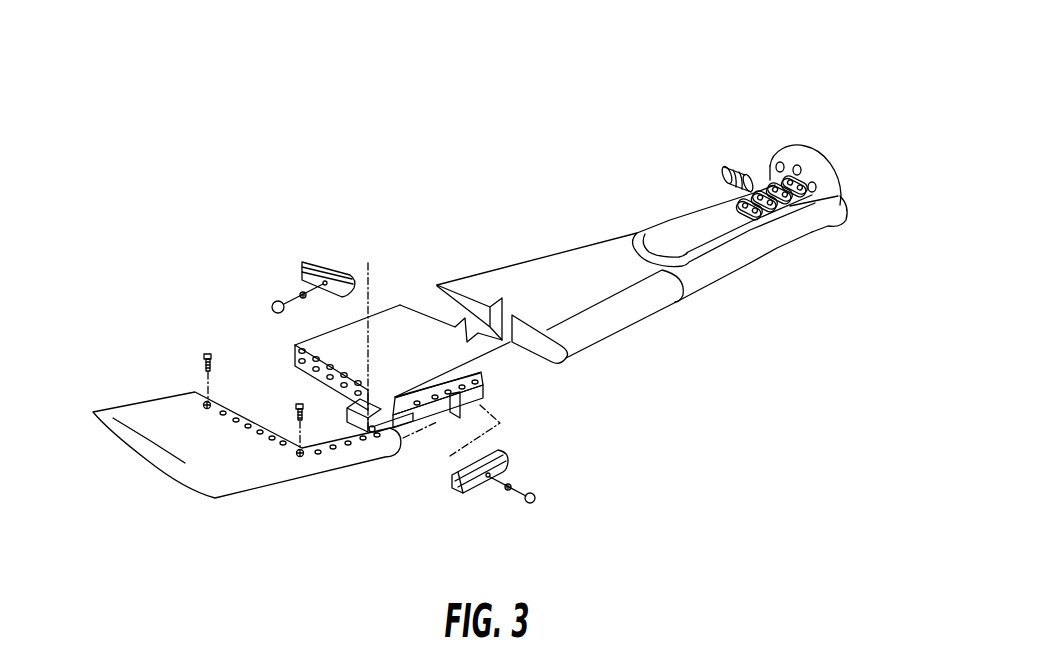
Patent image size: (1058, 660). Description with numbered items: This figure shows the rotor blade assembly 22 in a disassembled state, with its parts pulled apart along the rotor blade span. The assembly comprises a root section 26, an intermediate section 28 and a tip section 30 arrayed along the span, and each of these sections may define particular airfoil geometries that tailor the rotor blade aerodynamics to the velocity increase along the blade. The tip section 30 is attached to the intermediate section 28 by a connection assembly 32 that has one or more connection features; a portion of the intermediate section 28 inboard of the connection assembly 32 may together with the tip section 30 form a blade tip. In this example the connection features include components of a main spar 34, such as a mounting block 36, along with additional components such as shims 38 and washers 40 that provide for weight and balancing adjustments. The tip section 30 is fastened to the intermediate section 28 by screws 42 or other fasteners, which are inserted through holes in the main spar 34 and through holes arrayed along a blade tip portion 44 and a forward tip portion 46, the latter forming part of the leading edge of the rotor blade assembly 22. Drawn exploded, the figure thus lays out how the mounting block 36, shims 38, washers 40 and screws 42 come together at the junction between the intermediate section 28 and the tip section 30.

The rotor blade assembly 22 is at (609, 123).
The root section 26 is at (785, 245).
The intermediate section 28 is at (407, 312).
The tip section 30 is at (208, 457).
The connection assembly 32 is at (364, 490).
The main spar 34 is at (496, 393).
The mounting block 36 is at (331, 401).
The shims 38 is at (331, 253).
The washers 40 is at (271, 294).
The screws 42 is at (203, 348).
The blade tip portion 44 is at (177, 432).
The forward tip portion 46 is at (382, 453).